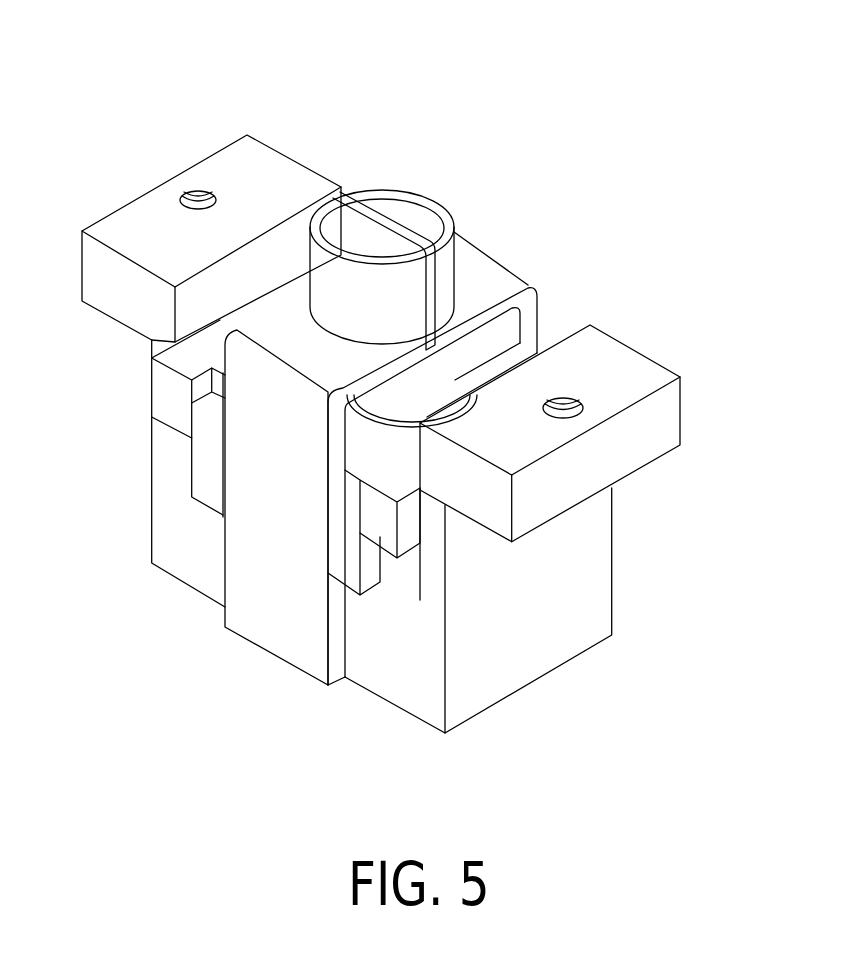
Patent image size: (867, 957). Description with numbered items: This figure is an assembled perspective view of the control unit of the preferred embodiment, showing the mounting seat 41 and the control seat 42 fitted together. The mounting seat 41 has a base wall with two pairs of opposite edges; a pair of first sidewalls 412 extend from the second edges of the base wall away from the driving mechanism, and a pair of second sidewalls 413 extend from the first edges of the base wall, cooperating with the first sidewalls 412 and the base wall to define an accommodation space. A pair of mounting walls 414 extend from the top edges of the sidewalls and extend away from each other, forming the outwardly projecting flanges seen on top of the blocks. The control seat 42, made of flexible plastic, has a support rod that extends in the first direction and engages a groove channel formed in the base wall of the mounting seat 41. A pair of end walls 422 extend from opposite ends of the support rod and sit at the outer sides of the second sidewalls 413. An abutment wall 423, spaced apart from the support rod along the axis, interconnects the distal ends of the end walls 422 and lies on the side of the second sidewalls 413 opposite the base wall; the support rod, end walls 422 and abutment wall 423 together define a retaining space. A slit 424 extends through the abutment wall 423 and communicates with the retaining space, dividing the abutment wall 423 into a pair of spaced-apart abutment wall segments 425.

The mounting seat 41 is at (175, 150).
The first sidewalls 412 is at (550, 635).
The second sidewalls 413 is at (192, 548).
The mounting walls 414 is at (132, 230).
The control seat 42 is at (430, 173).
The end walls 422 is at (272, 603).
The abutment wall 423 is at (447, 207).
The slit 424 is at (432, 278).
The abutment wall segments 425 is at (390, 203).